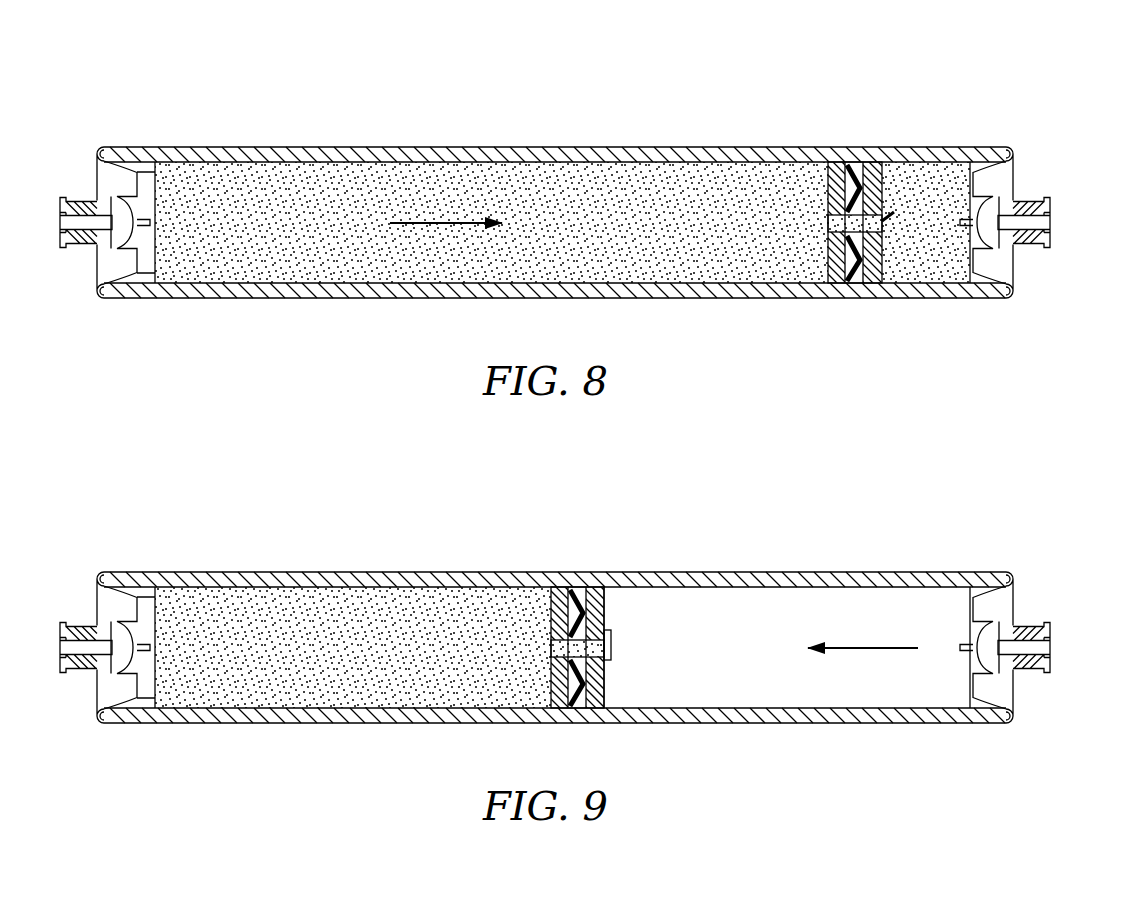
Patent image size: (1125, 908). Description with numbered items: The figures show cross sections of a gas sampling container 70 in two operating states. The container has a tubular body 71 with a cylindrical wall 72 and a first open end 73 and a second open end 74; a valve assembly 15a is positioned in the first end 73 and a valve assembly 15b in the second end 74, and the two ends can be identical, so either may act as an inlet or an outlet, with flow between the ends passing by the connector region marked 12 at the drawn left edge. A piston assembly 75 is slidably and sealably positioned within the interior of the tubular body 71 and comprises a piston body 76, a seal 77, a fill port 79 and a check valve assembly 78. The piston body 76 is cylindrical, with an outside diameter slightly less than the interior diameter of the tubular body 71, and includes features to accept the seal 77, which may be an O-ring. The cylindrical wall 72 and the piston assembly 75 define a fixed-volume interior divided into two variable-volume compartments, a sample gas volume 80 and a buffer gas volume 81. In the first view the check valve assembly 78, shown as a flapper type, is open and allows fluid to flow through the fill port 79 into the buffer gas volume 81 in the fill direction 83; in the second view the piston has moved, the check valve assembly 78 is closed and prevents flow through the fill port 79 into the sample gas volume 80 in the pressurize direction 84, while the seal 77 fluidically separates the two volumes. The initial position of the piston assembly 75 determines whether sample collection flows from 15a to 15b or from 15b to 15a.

In FIG. 8, the fluid connector line 12 is at (12, 237).
In FIG. 9, the fluid connector line 12 is at (12, 570).
In FIG. 8, the valve assembly 15a is at (84, 142).
In FIG. 9, the valve assembly 15a is at (84, 567).
In FIG. 8, the valve assembly 15b is at (1048, 183).
In FIG. 9, the valve assembly 15b is at (1048, 608).
In FIG. 8, the gas sampling container 70 is at (383, 122).
In FIG. 9, the gas sampling container 70 is at (383, 548).
In FIG. 8, the tubular body 71 is at (560, 132).
In FIG. 9, the tubular body 71 is at (690, 557).
In FIG. 8, the cylindrical wall 72 is at (621, 152).
In FIG. 9, the cylindrical wall 72 is at (841, 577).
In FIG. 8, the first open end 73 is at (105, 151).
In FIG. 9, the first open end 73 is at (105, 576).
In FIG. 8, the second open end 74 is at (1002, 149).
In FIG. 9, the second open end 74 is at (1003, 574).
In FIG. 8, the piston assembly 75 is at (853, 211).
In FIG. 9, the piston assembly 75 is at (576, 637).
In FIG. 8, the piston body 76 is at (837, 265).
In FIG. 9, the piston body 76 is at (560, 692).
In FIG. 8, the seal 77 is at (858, 268).
In FIG. 9, the seal 77 is at (582, 692).
In FIG. 8, the check valve assembly 78 is at (890, 220).
In FIG. 9, the check valve assembly 78 is at (612, 650).
In FIG. 8, the fill port 79 is at (830, 222).
In FIG. 9, the fill port 79 is at (552, 647).
In FIG. 8, the sample gas volume 80 is at (313, 240).
In FIG. 9, the sample gas volume 80 is at (313, 665).
In FIG. 8, the buffer gas volume 81 is at (935, 192).
In FIG. 9, the buffer gas volume 81 is at (935, 617).
In FIG. 8, the fill direction 83 is at (420, 226).
In FIG. 9, the pressurize direction 84 is at (868, 652).